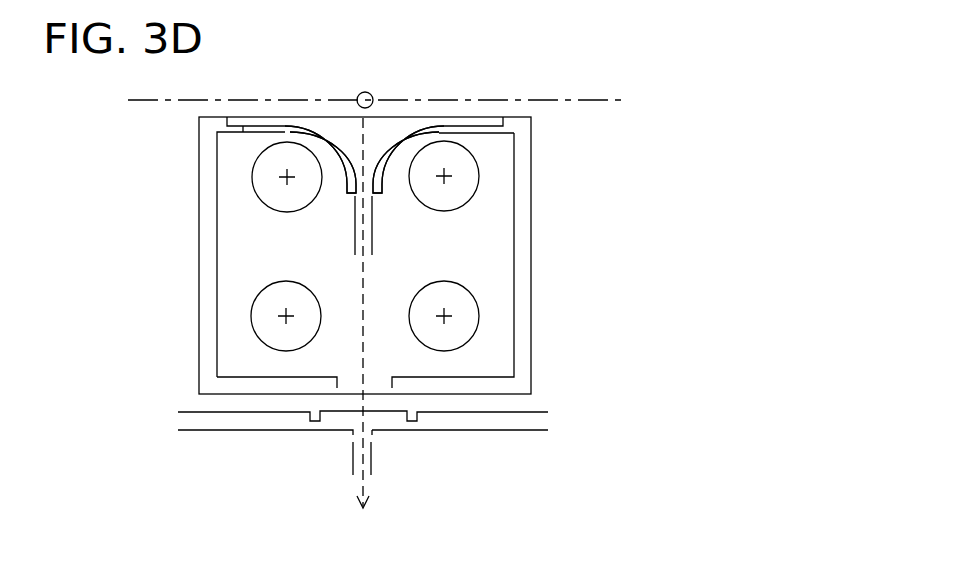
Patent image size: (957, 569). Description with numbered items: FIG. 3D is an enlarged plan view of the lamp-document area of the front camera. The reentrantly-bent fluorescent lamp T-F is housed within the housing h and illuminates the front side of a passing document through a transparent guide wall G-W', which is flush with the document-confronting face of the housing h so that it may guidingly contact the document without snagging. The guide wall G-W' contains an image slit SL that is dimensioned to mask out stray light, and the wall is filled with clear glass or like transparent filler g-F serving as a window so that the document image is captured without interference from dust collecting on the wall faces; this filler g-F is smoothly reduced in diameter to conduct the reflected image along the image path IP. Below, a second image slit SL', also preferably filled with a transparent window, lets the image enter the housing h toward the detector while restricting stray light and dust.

The guide wall G-W' is at (509, 103).
The transparent filler g-F is at (541, 117).
The image slit SL is at (549, 225).
The fluorescent lamp T-F is at (479, 318).
The second image slit SL' is at (553, 458).
The housing h is at (293, 430).
The image path IP is at (520, 329).